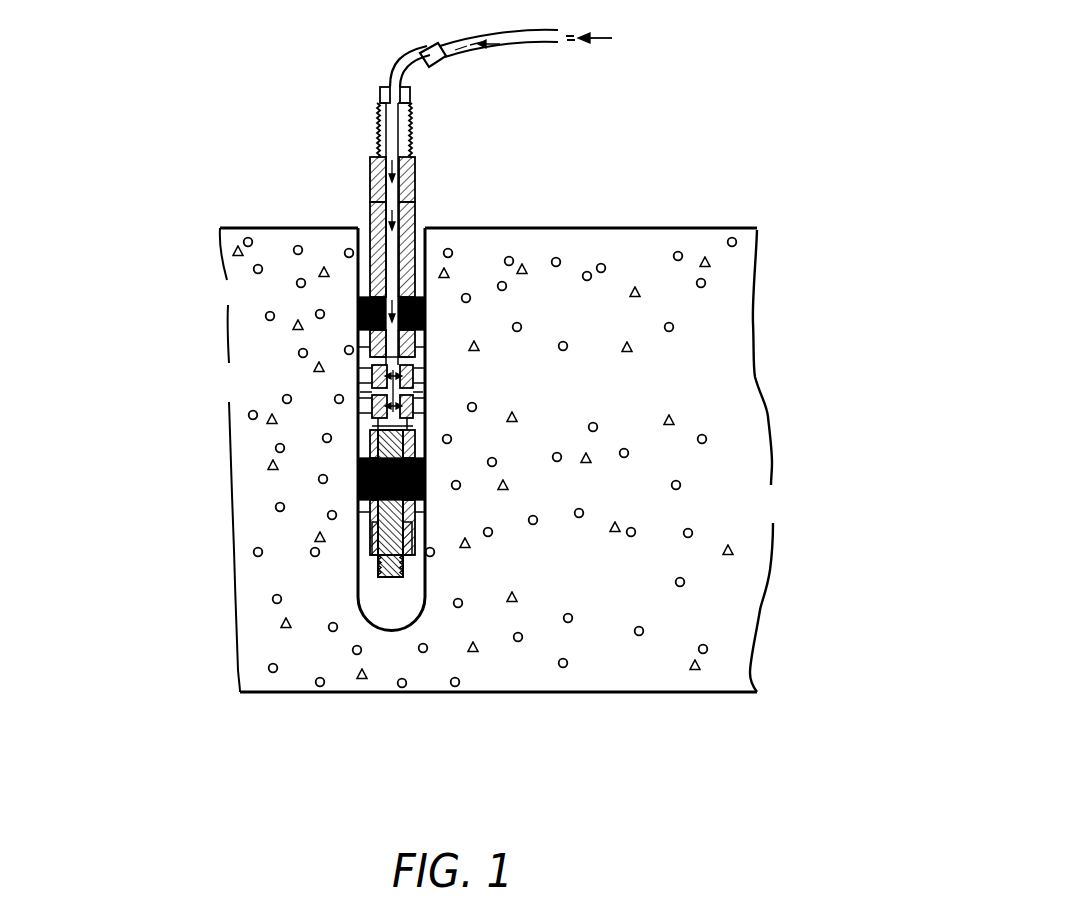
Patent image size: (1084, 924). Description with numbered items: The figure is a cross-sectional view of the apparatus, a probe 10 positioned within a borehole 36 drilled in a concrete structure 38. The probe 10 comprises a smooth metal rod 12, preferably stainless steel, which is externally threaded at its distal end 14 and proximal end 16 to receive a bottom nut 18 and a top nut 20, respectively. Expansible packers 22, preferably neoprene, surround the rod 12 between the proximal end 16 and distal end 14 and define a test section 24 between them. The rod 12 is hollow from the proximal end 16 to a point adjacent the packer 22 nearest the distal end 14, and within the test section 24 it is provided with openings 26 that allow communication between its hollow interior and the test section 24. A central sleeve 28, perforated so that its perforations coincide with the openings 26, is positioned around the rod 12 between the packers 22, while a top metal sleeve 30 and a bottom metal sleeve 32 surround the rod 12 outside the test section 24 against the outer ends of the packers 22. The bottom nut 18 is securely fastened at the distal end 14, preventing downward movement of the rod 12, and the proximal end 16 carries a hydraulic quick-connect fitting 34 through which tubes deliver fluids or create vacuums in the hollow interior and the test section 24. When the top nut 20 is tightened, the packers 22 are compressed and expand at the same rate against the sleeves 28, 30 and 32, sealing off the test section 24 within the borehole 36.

The probe 10 is at (322, 125).
The rod 12 is at (416, 222).
The distal end 14 is at (398, 580).
The proximal end 16 is at (408, 117).
The bottom nut 18 is at (424, 540).
The top nut 20 is at (430, 171).
The packers 22 is at (351, 307).
The test section 24 is at (432, 405).
The openings 26 is at (420, 370).
The central sleeve 28 is at (358, 397).
The top metal sleeve 30 is at (362, 194).
The bottom metal sleeve 32 is at (428, 511).
The hydraulic quick-connect fitting 34 is at (437, 66).
The borehole 36 is at (366, 228).
The concrete structure 38 is at (718, 230).